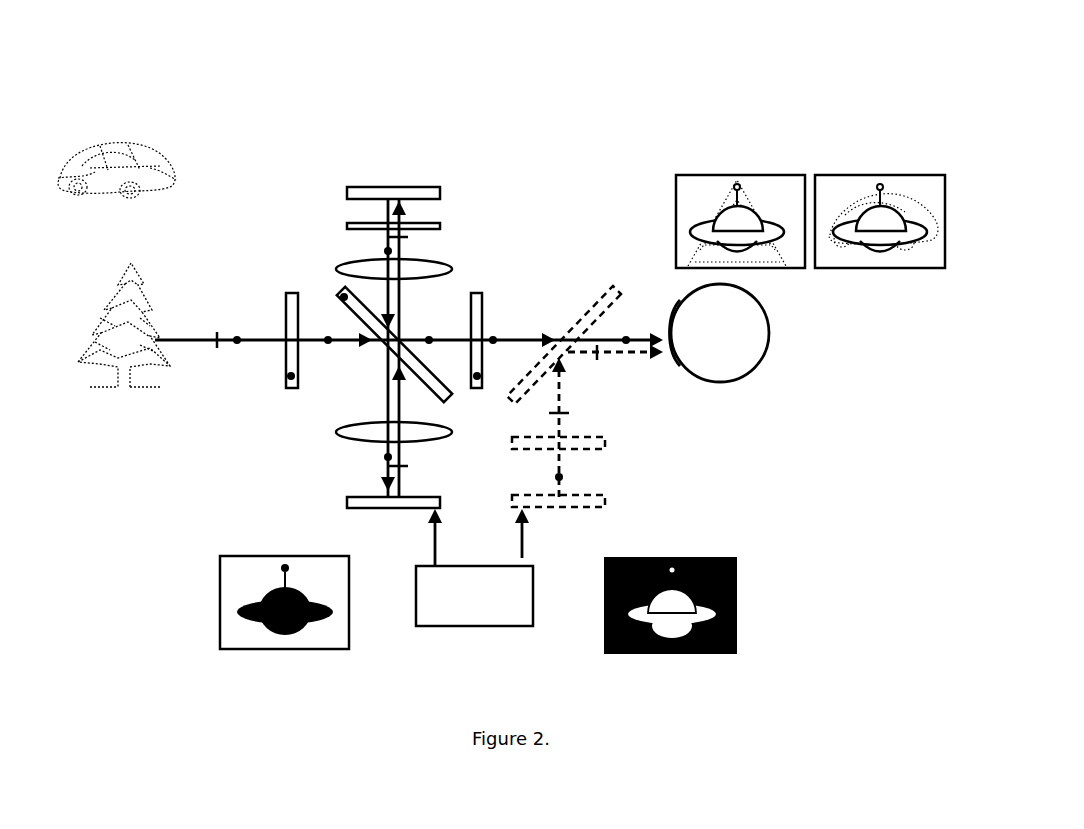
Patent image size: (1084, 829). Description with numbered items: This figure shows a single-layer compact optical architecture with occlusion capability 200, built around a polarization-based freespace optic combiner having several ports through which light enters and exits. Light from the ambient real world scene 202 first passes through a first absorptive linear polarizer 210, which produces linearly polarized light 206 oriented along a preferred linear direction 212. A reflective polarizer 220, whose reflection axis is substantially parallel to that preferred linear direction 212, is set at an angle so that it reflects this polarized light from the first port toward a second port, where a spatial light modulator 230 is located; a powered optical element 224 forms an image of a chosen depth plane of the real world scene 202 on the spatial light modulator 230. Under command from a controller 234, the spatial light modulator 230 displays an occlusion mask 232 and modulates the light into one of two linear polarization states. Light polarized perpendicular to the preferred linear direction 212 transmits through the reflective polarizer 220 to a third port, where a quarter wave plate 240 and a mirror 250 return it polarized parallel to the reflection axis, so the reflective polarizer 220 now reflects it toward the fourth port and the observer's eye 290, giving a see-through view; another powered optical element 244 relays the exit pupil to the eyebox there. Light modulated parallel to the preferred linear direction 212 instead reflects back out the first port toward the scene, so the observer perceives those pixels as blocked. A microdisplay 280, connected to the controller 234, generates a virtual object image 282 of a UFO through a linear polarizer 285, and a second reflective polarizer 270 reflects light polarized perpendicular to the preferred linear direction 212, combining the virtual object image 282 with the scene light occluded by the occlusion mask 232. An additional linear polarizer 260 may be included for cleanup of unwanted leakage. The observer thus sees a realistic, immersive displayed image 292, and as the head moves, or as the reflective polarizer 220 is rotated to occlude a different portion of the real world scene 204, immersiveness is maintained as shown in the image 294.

The optical architecture with occlusion capability 200 is at (254, 60).
The ambient real world scene 202 is at (125, 270).
The different portion of the real world scene 204 is at (108, 142).
The linearly polarized light 206 is at (192, 345).
The first absorptive linear polarizer 210 is at (286, 294).
The preferred linear direction 212 is at (328, 344).
The reflective polarizer 220 is at (337, 290).
The powered optical element 224 is at (436, 443).
The spatial light modulator 230 is at (347, 503).
The occlusion mask 232 is at (220, 612).
The controller 234 is at (474, 567).
The quarter wave plate 240 is at (347, 225).
The powered optical element 244 is at (452, 270).
The mirror 250 is at (362, 186).
The linear polarizer 260 is at (482, 294).
The second reflective polarizer 270 is at (620, 287).
The microdisplay 280 is at (605, 505).
The virtual object image 282 is at (736, 568).
The linear polarizer 285 is at (605, 448).
The observer's eye 290 is at (720, 382).
The displayed image 292 is at (748, 175).
The displayed image with maintained immersiveness 294 is at (885, 175).